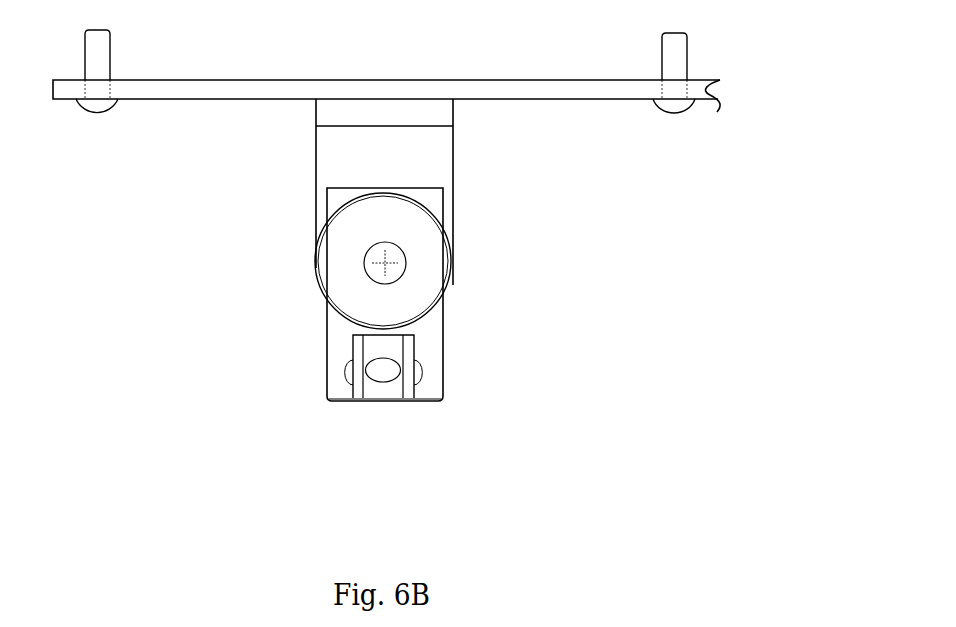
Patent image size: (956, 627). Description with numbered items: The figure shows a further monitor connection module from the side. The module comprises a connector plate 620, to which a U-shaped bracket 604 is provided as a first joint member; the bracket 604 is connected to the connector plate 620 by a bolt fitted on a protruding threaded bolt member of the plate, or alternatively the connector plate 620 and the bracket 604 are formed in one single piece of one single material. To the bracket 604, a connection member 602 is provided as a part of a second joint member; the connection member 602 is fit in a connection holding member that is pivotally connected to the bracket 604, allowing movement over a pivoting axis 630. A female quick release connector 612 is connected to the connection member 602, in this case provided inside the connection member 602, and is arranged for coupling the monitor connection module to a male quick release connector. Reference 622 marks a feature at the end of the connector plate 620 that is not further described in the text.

The connection member 602 is at (328, 332).
The U-shaped bracket 604 is at (453, 142).
The female quick release connector 612 is at (403, 375).
The connector plate 620 is at (577, 101).
The mounting post 622 is at (670, 61).
The pivoting axis 630 is at (388, 256).